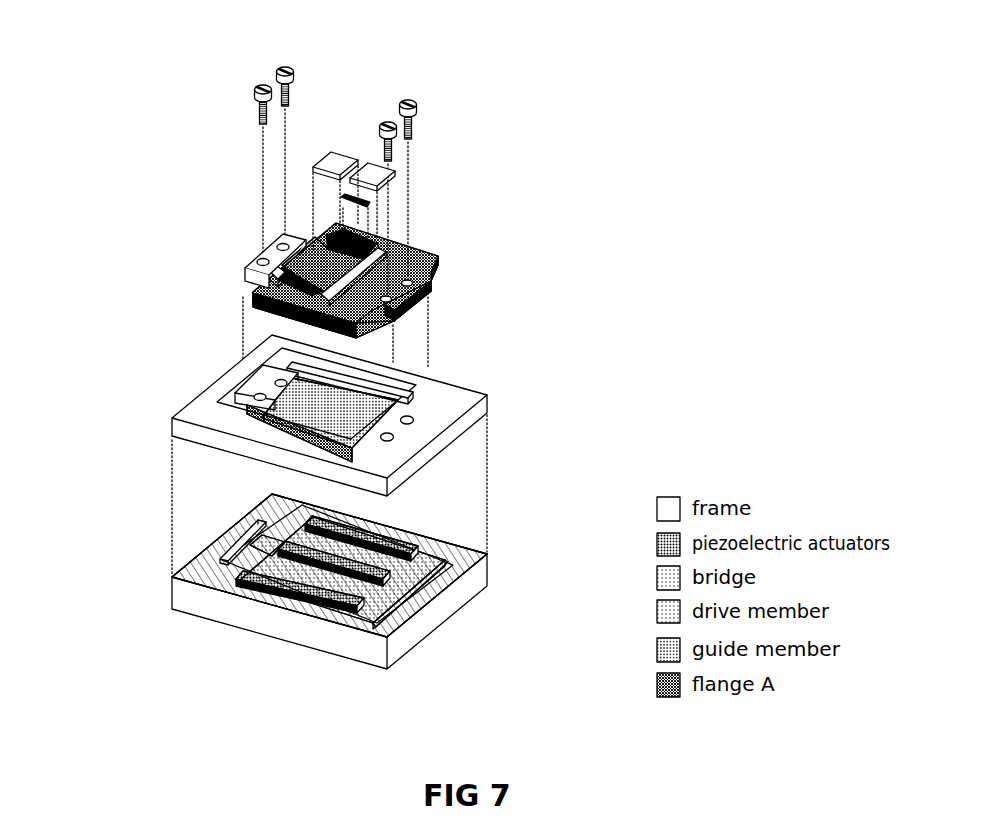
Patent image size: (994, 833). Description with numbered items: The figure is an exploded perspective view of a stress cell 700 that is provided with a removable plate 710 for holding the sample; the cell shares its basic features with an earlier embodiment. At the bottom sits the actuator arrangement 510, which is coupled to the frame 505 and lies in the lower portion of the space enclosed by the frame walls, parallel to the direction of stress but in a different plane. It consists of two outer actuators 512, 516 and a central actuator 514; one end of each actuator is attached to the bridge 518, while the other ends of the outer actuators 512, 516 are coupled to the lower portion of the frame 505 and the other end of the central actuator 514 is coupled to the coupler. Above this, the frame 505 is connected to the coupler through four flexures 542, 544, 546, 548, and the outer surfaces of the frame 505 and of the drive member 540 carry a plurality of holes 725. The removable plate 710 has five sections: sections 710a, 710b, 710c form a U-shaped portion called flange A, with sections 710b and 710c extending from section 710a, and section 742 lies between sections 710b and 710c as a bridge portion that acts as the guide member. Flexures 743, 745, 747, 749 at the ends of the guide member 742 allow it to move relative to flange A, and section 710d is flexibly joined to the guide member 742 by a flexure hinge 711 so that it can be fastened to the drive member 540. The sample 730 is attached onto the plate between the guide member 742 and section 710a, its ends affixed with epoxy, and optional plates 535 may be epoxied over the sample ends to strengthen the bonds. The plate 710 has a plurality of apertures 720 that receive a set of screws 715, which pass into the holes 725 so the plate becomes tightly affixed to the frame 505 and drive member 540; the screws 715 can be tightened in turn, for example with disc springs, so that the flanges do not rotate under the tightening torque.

The stress cell 700 is at (118, 132).
The screws 715 is at (412, 104).
The plates 535 is at (333, 162).
The sample 730 is at (368, 199).
The removable plate 710 is at (440, 257).
The section of the plate (flange A) 710a is at (433, 285).
The section of the plate 710b is at (358, 242).
The section of the plate 710c is at (322, 313).
The section of the plate 710d is at (258, 256).
The apertures 720 is at (431, 279).
The flexure 747 is at (399, 306).
The flexure 743 is at (384, 251).
The guide member (bridge section) 742 is at (292, 282).
The flexure 745 is at (308, 238).
The flexure 749 is at (268, 279).
The flexure hinge 711 is at (268, 246).
The frame 505 is at (452, 404).
The flexure 544 is at (258, 370).
The flexure 548 is at (232, 402).
The holes 725 is at (413, 421).
The flexure 542 is at (414, 400).
The drive member 540 is at (394, 440).
The flexure 546 is at (354, 452).
The actuator arrangement 510 is at (321, 689).
The outer piezoelectric actuator 512 is at (302, 617).
The central piezoelectric actuator 514 is at (341, 617).
The outer piezoelectric actuator 516 is at (363, 622).
The bridge 518 is at (440, 578).